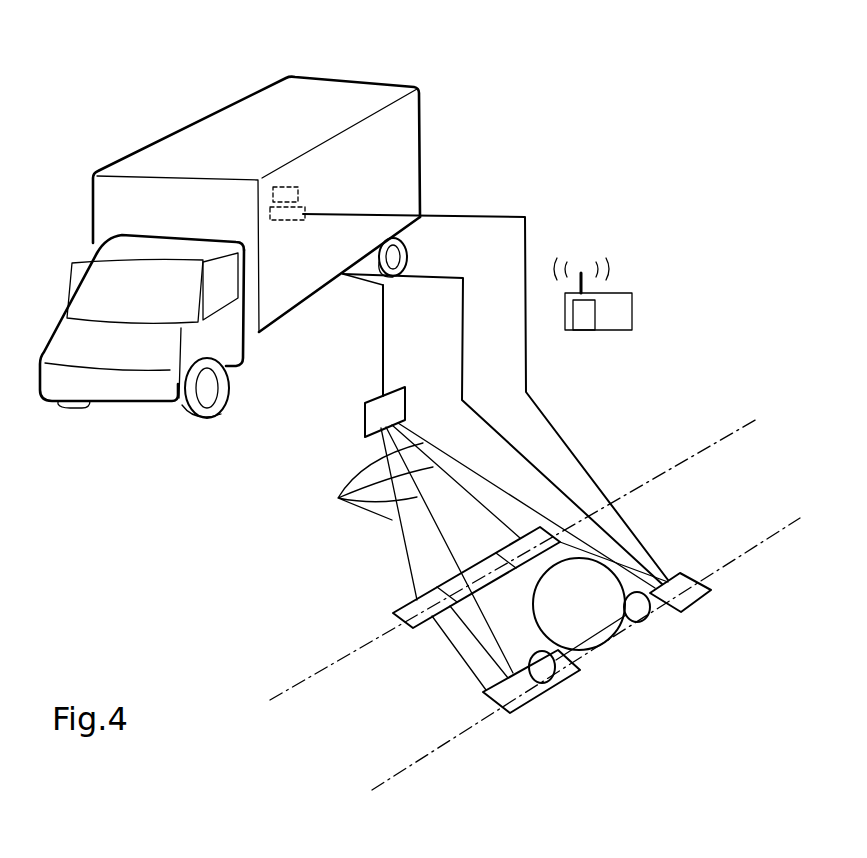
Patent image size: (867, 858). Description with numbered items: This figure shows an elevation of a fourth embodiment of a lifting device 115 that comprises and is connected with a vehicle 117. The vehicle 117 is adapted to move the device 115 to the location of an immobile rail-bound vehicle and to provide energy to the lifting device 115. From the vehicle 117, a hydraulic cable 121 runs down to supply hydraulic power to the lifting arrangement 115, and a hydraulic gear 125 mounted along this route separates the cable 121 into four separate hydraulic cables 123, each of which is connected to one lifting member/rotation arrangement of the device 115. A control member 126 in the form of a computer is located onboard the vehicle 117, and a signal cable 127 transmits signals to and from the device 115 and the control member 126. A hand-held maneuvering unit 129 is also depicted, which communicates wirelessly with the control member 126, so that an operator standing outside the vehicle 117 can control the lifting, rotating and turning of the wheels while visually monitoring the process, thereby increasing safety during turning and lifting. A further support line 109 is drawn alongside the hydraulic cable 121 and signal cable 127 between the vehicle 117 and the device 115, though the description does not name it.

The sensor support frame 109 is at (465, 327).
The device 115 is at (683, 610).
The vehicle 117 is at (400, 132).
The hydraulic cable 121 is at (383, 343).
The hydraulic cables 123 is at (362, 481).
The hydraulic gear 125 is at (367, 418).
The control member 126 is at (273, 198).
The signal cable 127 is at (528, 373).
The hand-held maneuvering unit 129 is at (620, 312).